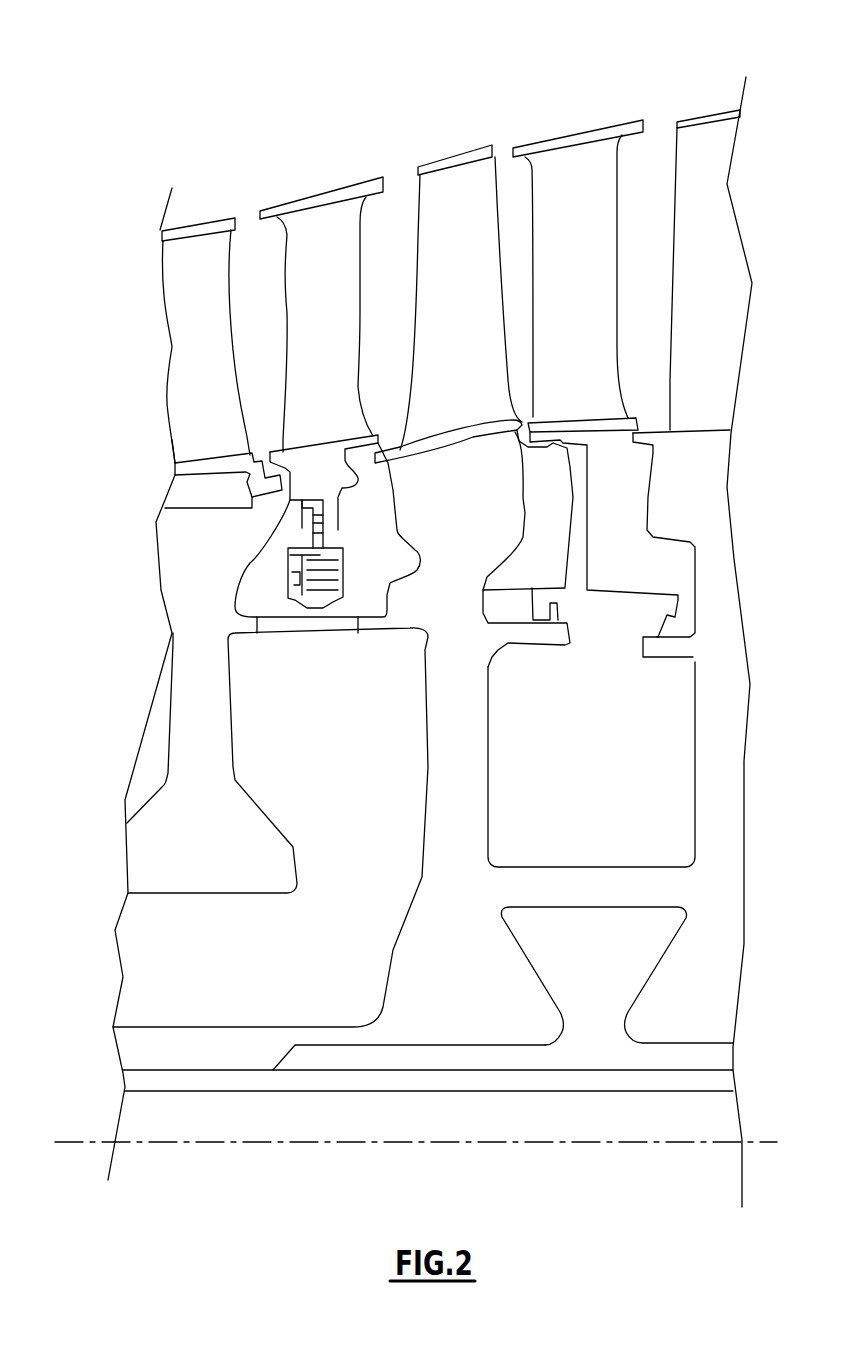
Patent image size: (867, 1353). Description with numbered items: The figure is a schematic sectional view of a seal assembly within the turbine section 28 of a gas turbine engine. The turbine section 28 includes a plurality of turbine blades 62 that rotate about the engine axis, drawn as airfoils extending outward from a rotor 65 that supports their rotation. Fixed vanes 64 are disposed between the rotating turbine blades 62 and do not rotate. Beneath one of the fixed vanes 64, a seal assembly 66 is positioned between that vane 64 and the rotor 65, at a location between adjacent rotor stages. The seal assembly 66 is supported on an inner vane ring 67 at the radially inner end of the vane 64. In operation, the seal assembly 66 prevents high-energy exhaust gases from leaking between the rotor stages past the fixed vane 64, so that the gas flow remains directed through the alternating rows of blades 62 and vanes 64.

The turbine section 28 is at (140, 76).
The turbine blades 62 is at (197, 255).
The vanes 64 is at (327, 227).
The rotor 65 is at (452, 763).
The seal assembly 66 is at (279, 607).
The inner vane ring 67 is at (332, 518).